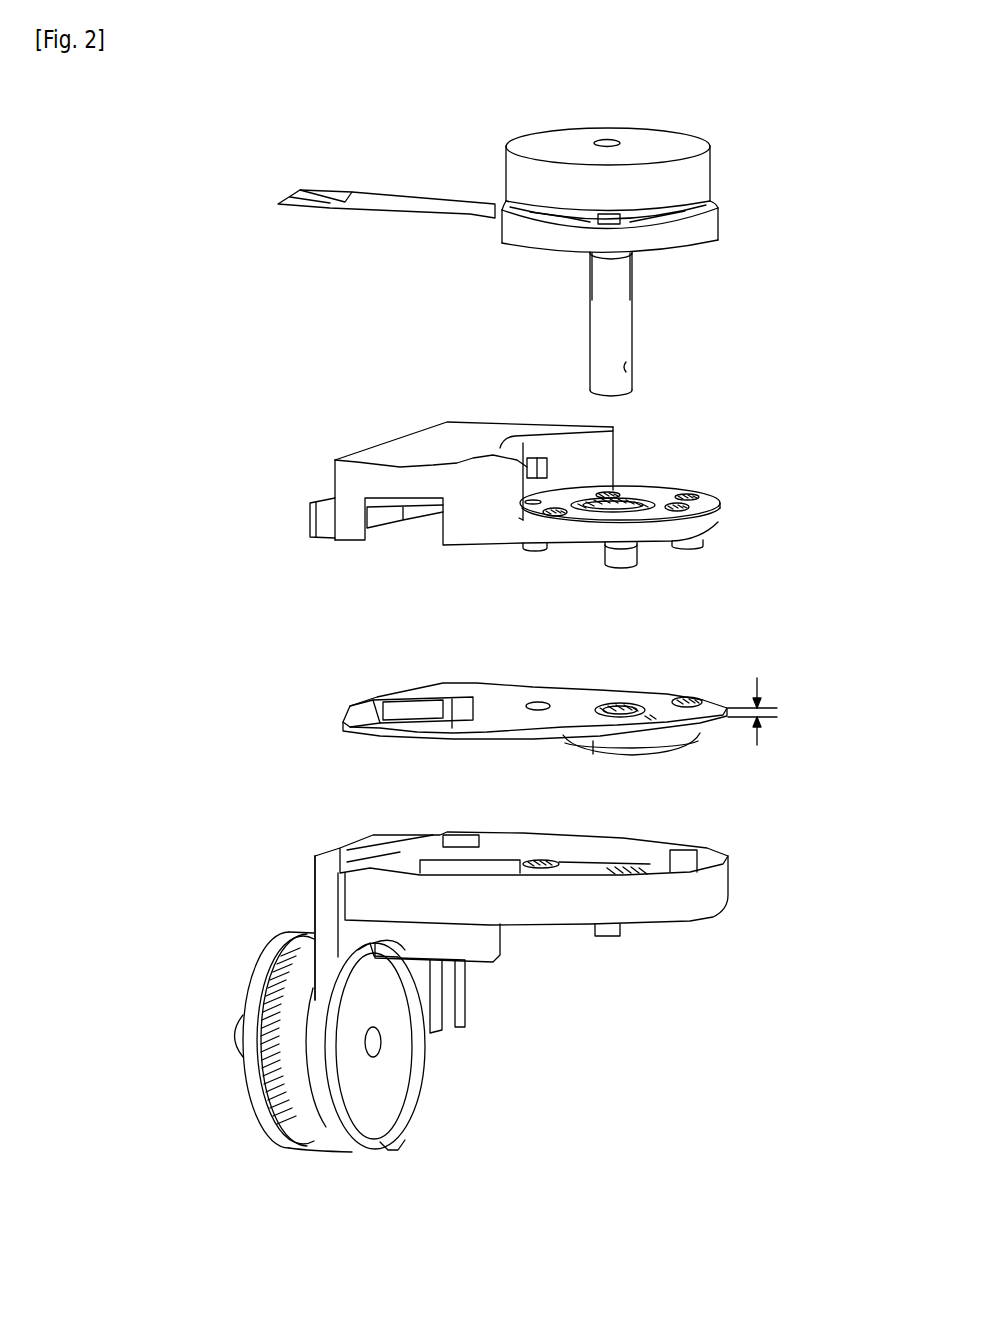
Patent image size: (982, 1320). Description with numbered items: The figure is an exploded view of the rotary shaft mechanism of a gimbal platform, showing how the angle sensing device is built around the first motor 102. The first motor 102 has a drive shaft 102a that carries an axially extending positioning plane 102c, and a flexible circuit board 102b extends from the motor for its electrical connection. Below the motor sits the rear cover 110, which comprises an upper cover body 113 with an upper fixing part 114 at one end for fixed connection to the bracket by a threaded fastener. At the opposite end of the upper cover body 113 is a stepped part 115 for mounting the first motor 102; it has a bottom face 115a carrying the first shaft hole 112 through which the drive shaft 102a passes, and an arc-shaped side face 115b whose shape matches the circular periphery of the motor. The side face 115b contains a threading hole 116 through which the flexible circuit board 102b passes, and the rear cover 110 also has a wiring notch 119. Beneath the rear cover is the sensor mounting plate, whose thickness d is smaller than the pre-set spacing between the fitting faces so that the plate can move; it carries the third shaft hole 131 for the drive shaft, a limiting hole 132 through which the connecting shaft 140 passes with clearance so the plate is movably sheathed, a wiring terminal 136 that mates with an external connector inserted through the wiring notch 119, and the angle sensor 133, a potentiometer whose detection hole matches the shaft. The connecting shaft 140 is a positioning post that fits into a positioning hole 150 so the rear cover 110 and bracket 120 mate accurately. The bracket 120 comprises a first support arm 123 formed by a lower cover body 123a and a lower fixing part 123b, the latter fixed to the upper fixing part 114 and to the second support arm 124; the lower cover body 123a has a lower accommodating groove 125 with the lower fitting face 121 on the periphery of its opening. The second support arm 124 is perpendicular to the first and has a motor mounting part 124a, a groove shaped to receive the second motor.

The first motor 102 is at (662, 182).
The drive shaft 102a is at (608, 323).
The flexible circuit board 102b is at (389, 203).
The positioning plane 102c is at (592, 298).
The rear cover 110 is at (398, 332).
The first shaft hole 112 is at (600, 513).
The upper cover body 113 is at (450, 436).
The upper fixing part 114 is at (310, 503).
The stepped part 115 is at (697, 383).
The bottom face 115a is at (703, 504).
The side face 115b is at (600, 443).
The threading hole 116 is at (536, 458).
The wiring notch 119 is at (422, 530).
The bracket 120 is at (680, 1077).
The lower fitting face 121 is at (725, 853).
The first support arm 123 is at (516, 899).
The lower cover body 123a is at (460, 883).
The lower fixing part 123b is at (327, 850).
The second support arm 124 is at (407, 1140).
The motor mounting part 124a is at (383, 1150).
The lower accommodating groove 125 is at (590, 857).
The third shaft hole 131 is at (620, 707).
The limiting hole 132 is at (538, 702).
The angle sensor 133 is at (670, 738).
The wiring terminal 136 is at (407, 700).
The connecting shaft 140 is at (690, 548).
The positioning hole 150 is at (545, 860).
The thickness d is at (764, 711).